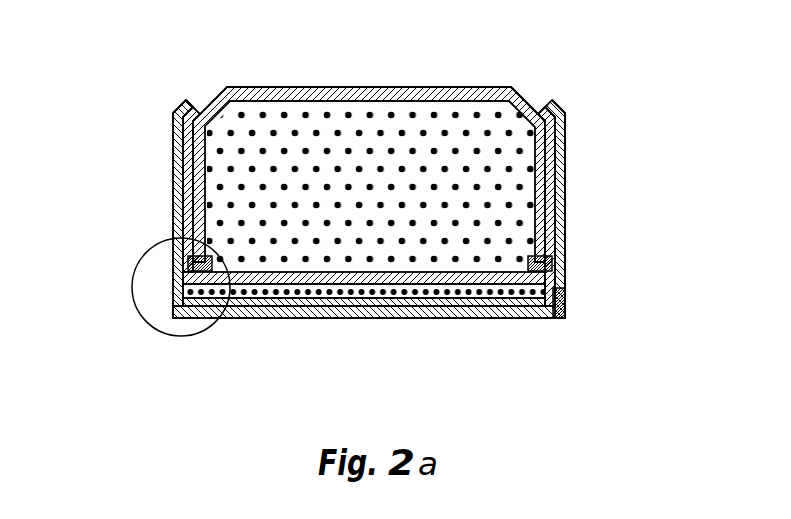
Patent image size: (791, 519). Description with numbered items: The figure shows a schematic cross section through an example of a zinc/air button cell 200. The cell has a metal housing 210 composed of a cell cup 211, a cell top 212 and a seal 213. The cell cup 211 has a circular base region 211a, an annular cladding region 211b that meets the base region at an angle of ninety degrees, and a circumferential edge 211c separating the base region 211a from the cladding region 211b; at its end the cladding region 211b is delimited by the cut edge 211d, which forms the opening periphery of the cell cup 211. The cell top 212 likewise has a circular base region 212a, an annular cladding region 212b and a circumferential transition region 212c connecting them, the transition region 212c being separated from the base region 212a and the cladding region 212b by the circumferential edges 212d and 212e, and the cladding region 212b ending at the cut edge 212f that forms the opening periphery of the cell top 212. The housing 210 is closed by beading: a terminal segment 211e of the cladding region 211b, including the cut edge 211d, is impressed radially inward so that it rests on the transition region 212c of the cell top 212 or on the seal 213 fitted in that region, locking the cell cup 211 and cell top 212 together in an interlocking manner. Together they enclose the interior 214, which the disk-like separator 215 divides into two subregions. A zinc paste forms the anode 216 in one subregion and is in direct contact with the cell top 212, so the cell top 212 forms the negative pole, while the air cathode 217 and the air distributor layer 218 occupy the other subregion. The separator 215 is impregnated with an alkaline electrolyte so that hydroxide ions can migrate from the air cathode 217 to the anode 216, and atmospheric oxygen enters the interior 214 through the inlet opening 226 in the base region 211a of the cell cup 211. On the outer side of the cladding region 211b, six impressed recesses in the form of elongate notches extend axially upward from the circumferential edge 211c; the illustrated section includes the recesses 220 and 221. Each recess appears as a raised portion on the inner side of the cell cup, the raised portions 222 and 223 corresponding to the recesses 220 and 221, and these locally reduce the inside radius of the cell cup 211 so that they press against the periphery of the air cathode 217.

The zinc/air button cell 200 is at (360, 208).
The metal housing 210 is at (568, 262).
The cell cup 211 is at (175, 200).
The base region 211a is at (287, 318).
The cladding region 211b is at (175, 223).
The circumferential edge 211c is at (177, 317).
The cut edge 211d is at (189, 102).
The terminal segment 211e is at (179, 108).
The cell top 212 is at (223, 90).
The base region 212a is at (330, 90).
The cladding region 212b is at (557, 225).
The transition region 212c is at (551, 106).
The circumferential edge 212d is at (517, 91).
The circumferential edge 212e is at (560, 127).
The cut edge 212f is at (557, 282).
The seal 213 is at (567, 172).
The interior 214 is at (175, 177).
The separator 215 is at (430, 320).
The anode 216 is at (393, 107).
The air cathode 217 is at (482, 320).
The air distributor layer 218 is at (535, 320).
The recess 220 is at (173, 300).
The recess 221 is at (565, 297).
The raised portion 222 is at (147, 250).
The raised portion 223 is at (570, 318).
The inlet opening 226 is at (362, 316).